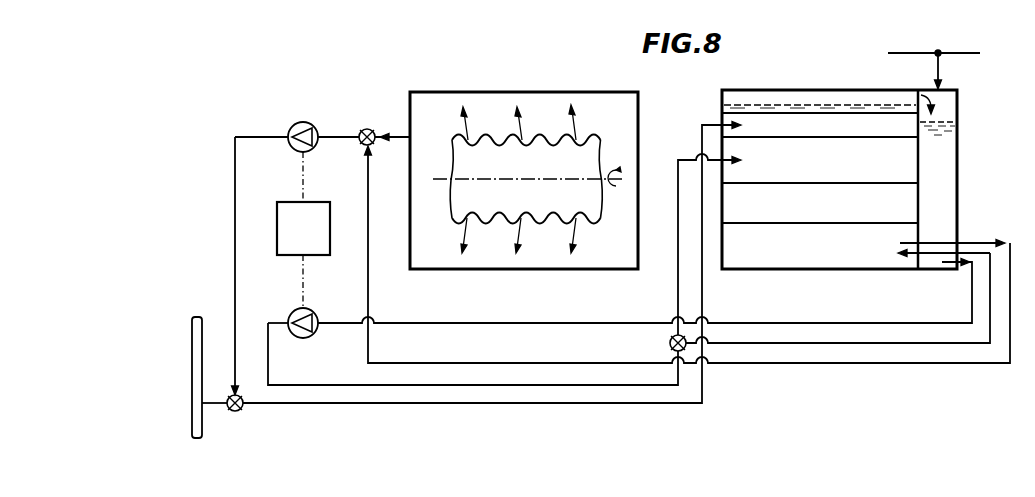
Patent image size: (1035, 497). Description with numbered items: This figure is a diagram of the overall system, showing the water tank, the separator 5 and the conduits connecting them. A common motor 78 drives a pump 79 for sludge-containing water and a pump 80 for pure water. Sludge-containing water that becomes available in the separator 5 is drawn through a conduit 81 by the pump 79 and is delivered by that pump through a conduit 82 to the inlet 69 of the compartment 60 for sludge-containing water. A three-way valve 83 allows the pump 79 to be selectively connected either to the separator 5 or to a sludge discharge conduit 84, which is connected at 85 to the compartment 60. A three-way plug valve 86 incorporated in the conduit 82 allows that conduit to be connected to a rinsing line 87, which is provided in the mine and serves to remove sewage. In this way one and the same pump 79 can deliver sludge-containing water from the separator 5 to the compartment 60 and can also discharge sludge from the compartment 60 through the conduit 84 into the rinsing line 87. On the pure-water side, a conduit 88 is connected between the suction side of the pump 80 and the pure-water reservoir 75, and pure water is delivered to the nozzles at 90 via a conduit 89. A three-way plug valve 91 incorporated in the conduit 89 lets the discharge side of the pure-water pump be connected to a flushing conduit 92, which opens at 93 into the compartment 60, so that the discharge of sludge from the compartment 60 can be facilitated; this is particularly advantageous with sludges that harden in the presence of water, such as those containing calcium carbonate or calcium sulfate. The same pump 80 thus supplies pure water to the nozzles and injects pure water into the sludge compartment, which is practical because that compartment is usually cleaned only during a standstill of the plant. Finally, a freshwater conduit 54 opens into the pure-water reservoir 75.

The separator 5 is at (525, 91).
The freshwater conduit 54 is at (944, 82).
The compartment for sludge-containing water 60 is at (819, 252).
The inlet 69 is at (721, 119).
The pure-water reservoir 75 is at (937, 166).
The common motor 78 is at (315, 237).
The pump for sludge-containing water 79 is at (292, 125).
The pump for pure water 80 is at (291, 313).
The conduit 81 is at (332, 133).
The conduit 82 is at (336, 404).
The three-way valve 83 is at (374, 128).
The sludge discharge conduit 84 is at (370, 237).
The connection of sludge discharge conduit 85 is at (906, 243).
The three-way plug valve 86 is at (242, 411).
The rinsing line 87 is at (193, 360).
The conduit 88 is at (463, 323).
The conduit 89 is at (459, 387).
The pure water delivery point 90 is at (721, 158).
The three-way plug valve 91 is at (670, 343).
The conduit 92 is at (851, 345).
The flushing conduit opening 93 is at (908, 260).